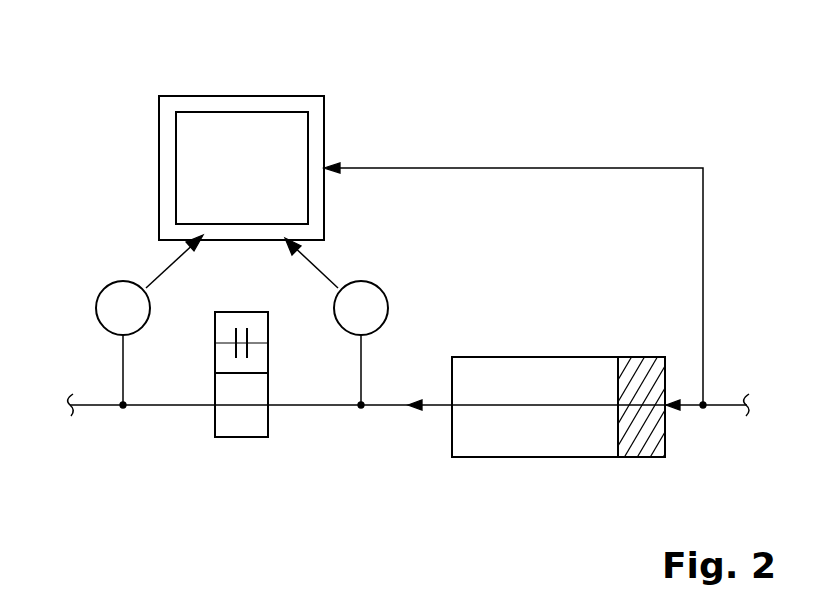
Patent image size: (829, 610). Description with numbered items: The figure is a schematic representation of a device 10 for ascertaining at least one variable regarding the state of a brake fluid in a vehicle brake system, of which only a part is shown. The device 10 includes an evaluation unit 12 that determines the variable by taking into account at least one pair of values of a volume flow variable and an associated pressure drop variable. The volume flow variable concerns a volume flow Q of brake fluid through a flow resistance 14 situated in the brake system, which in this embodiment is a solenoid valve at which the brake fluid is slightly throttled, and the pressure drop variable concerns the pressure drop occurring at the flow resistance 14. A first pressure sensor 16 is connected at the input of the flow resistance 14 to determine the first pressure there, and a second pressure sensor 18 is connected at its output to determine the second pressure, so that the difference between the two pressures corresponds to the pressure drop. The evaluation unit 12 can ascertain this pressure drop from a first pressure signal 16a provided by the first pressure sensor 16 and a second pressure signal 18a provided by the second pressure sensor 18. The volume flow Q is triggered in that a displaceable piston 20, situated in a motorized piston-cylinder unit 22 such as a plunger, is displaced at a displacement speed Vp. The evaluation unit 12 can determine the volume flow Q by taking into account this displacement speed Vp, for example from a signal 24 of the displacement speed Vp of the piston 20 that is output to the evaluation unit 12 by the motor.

The device 10 is at (285, 96).
The evaluation unit 12 is at (240, 112).
The flow resistance 14 is at (242, 312).
The first pressure sensor 16 is at (388, 307).
The first pressure signal 16a is at (320, 272).
The second pressure sensor 18 is at (97, 307).
The second pressure signal 18a is at (162, 270).
The displaceable piston 20 is at (640, 372).
The piston-cylinder unit 22 is at (550, 468).
The signal 24 is at (513, 168).
The volume flow Q is at (385, 407).
The displacement speed Vp is at (725, 408).